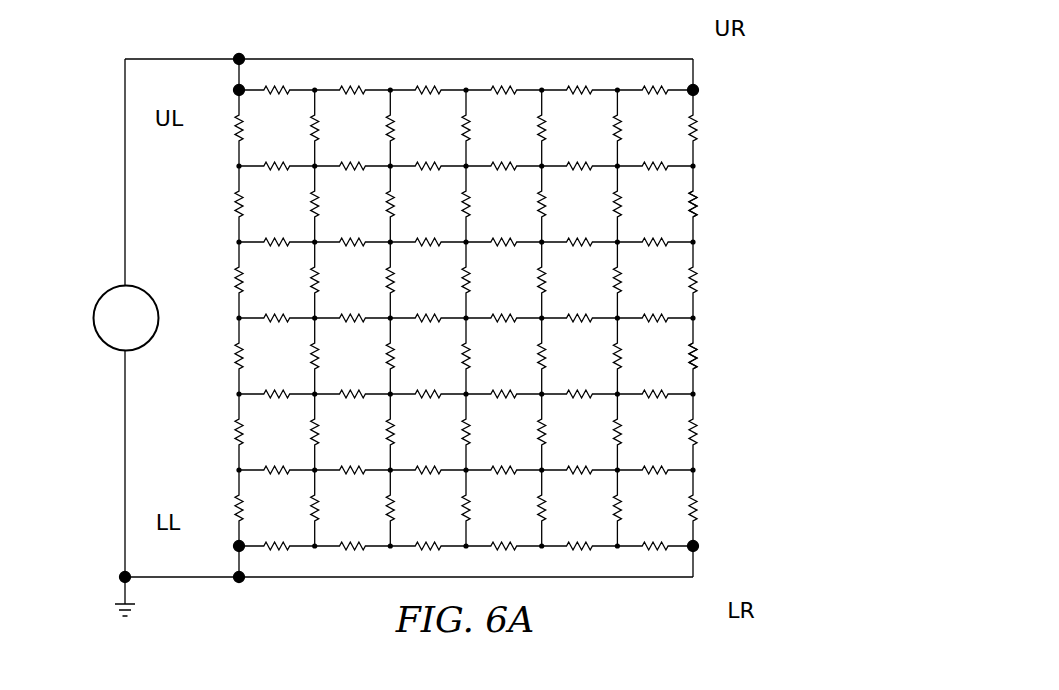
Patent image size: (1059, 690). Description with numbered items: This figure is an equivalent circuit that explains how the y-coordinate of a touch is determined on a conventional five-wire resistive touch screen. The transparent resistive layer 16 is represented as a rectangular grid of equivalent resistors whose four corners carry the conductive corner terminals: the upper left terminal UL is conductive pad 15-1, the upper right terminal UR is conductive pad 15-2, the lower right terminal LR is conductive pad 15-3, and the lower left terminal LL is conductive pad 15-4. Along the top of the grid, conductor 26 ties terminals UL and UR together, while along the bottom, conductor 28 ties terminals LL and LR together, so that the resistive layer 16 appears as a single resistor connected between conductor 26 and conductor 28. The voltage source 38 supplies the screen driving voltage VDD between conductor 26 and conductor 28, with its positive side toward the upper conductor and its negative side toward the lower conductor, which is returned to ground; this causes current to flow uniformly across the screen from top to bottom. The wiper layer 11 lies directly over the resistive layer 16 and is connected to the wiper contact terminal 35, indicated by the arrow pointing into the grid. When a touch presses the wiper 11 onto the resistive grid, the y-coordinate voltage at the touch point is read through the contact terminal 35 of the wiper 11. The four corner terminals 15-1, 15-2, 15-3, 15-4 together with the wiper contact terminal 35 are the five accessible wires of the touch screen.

The wiper layer 11 is at (742, 357).
The wiper contact terminal 35 is at (705, 356).
The transparent resistive layer 16 is at (707, 204).
The conductor 26 is at (197, 58).
The conductor 28 is at (197, 578).
The conductive pad 15-1 is at (228, 82).
The conductive pad 15-2 is at (703, 81).
The conductive pad 15-3 is at (699, 550).
The conductive pad 15-4 is at (228, 550).
The voltage source 38 is at (93, 318).